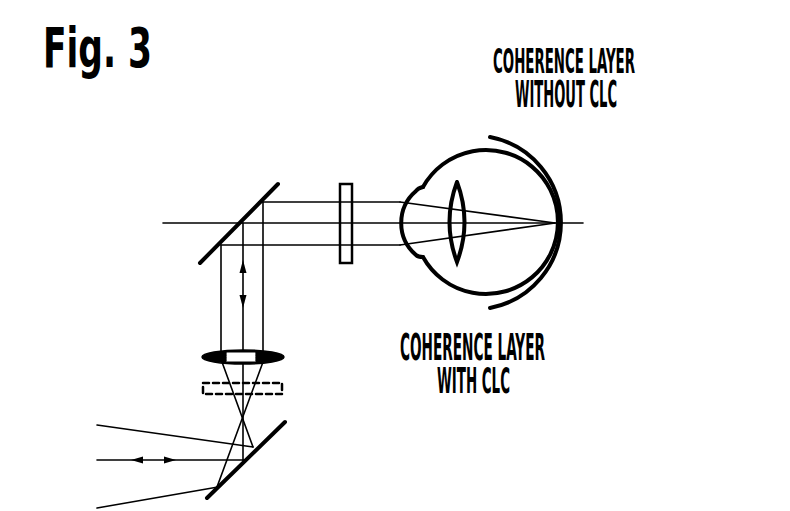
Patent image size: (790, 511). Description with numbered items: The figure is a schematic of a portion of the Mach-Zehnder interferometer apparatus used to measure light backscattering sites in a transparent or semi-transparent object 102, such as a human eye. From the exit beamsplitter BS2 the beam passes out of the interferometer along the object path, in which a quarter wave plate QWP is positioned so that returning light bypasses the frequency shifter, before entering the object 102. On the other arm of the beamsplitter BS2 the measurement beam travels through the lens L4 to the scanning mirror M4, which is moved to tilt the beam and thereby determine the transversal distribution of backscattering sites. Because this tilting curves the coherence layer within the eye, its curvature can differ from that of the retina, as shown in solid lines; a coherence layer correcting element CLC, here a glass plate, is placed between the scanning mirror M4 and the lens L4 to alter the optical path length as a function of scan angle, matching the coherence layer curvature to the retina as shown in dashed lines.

The exit beamsplitter BS2 is at (258, 203).
The quarter wave plate QWP is at (356, 192).
The object 102 is at (467, 165).
The lens L4 is at (282, 355).
The coherence layer correcting element CLC is at (270, 396).
The scanning mirror M4 is at (267, 442).